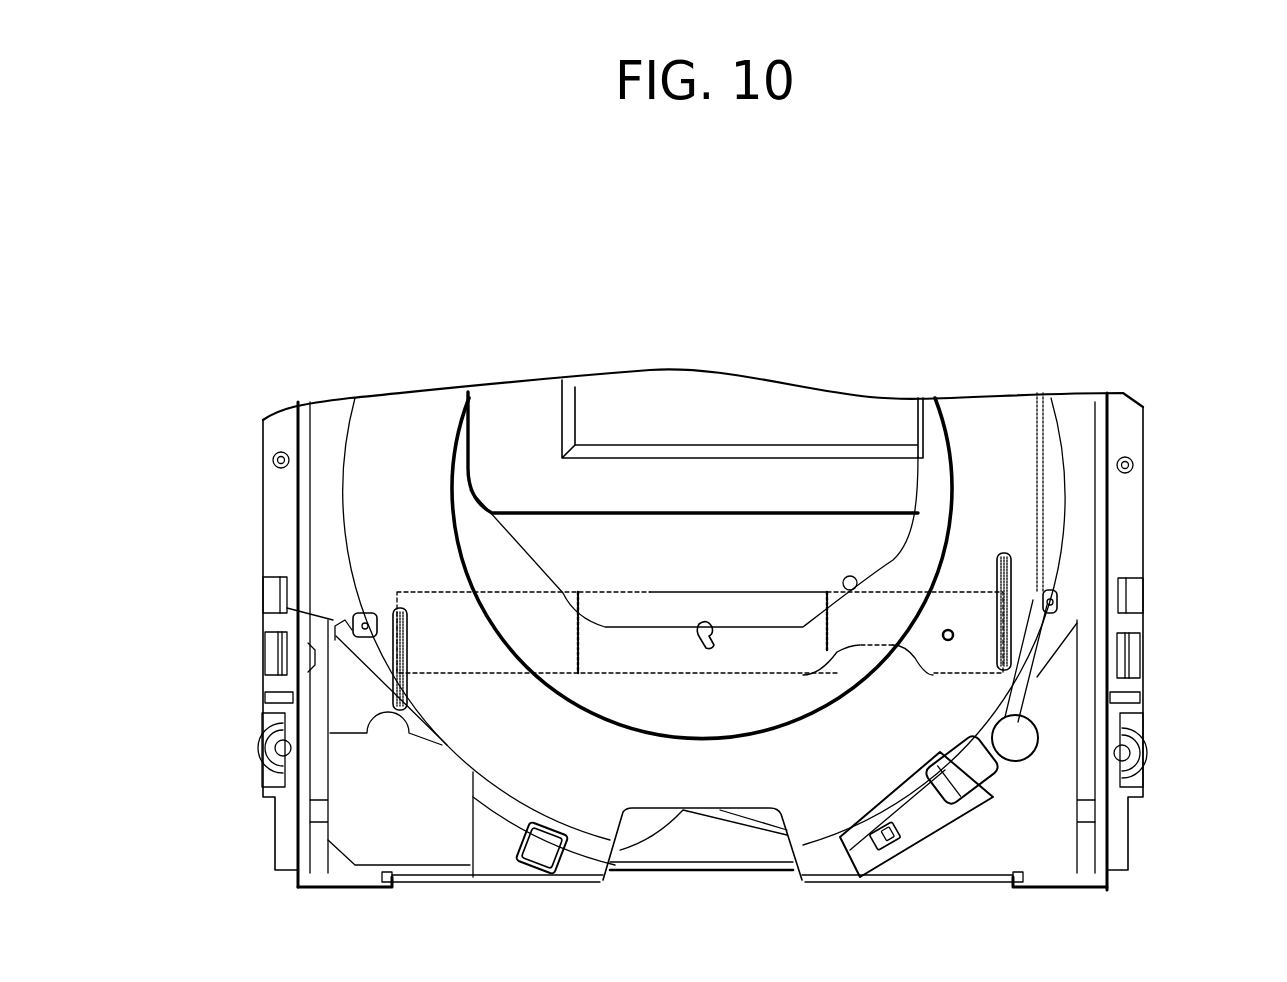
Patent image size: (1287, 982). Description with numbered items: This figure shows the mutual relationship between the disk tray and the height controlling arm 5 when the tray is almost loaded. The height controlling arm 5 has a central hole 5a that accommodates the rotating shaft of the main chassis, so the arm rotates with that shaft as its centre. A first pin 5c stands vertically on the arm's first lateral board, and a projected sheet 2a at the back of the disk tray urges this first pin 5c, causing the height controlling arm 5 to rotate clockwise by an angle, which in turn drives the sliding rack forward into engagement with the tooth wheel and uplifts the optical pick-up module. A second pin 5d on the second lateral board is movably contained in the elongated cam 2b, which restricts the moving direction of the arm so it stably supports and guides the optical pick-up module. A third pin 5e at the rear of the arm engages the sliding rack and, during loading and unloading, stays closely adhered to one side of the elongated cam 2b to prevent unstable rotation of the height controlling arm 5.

The height controlling arm 5 is at (432, 630).
The central hole 5a is at (706, 622).
The third pin 5e is at (957, 613).
The projected sheet 2a is at (293, 658).
The elongated cam 2b is at (1060, 507).
The first pin 5c is at (280, 607).
The second pin 5d is at (1123, 595).